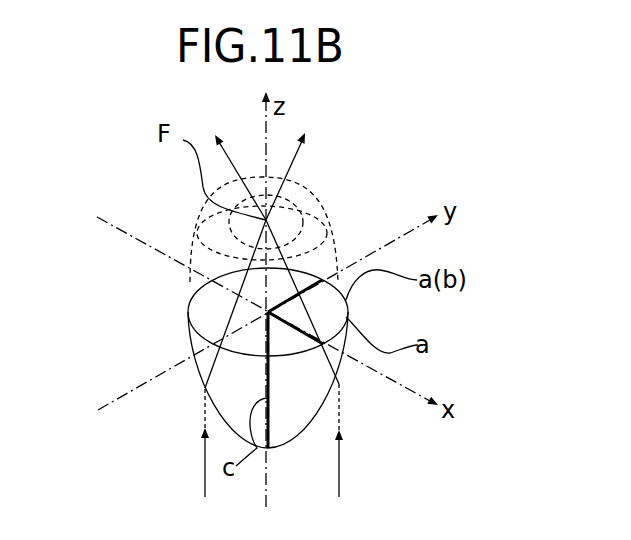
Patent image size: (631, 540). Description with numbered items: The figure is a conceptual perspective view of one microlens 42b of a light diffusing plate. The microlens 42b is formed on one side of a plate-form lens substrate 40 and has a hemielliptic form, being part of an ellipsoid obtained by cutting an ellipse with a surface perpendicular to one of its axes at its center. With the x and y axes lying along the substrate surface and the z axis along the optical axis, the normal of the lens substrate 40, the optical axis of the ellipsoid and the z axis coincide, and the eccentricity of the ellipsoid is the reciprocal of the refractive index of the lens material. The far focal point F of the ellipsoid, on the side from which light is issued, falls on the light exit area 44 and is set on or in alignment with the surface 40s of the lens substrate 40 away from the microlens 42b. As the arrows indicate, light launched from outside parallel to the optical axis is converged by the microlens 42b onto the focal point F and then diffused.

The lens substrate 40 is at (263, 321).
The surface of the lens substrate 40s is at (190, 240).
The microlens 42b is at (205, 388).
The light exit area 44 is at (314, 205).